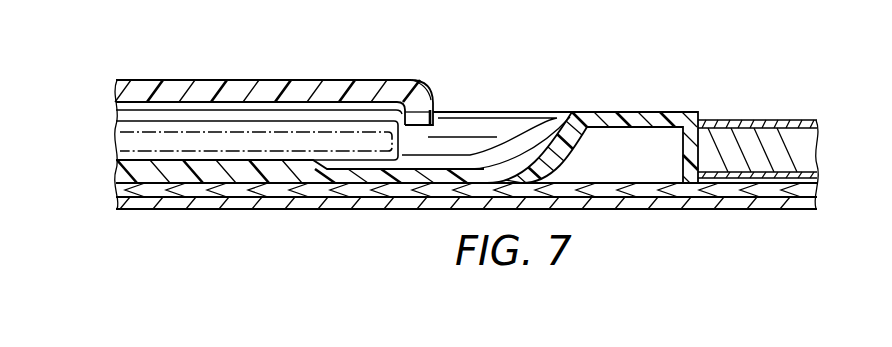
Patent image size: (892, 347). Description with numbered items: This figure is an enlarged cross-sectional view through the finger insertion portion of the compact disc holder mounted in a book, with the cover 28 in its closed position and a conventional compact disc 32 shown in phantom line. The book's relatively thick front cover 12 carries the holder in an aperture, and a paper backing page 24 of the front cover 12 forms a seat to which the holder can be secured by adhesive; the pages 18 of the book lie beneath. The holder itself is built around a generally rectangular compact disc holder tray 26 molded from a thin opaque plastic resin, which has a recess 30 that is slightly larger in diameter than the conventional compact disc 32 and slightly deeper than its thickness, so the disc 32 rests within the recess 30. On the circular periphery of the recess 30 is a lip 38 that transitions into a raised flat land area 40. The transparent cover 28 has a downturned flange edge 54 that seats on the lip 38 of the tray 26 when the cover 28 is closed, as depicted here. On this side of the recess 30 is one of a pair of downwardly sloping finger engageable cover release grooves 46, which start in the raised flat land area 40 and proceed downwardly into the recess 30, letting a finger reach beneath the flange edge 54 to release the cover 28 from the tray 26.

The front cover 12 is at (742, 120).
The pages 18 is at (283, 203).
The paper backing page 24 is at (228, 190).
The compact disc holder tray 26 is at (163, 173).
The cover 28 is at (285, 85).
The recess 30 is at (163, 158).
The conventional compact disc 32 is at (350, 137).
The lip 38 is at (218, 121).
The raised flat land area 40 is at (605, 112).
The finger engageable cover release grooves 46 is at (512, 144).
The downturned flange edge 54 is at (423, 98).